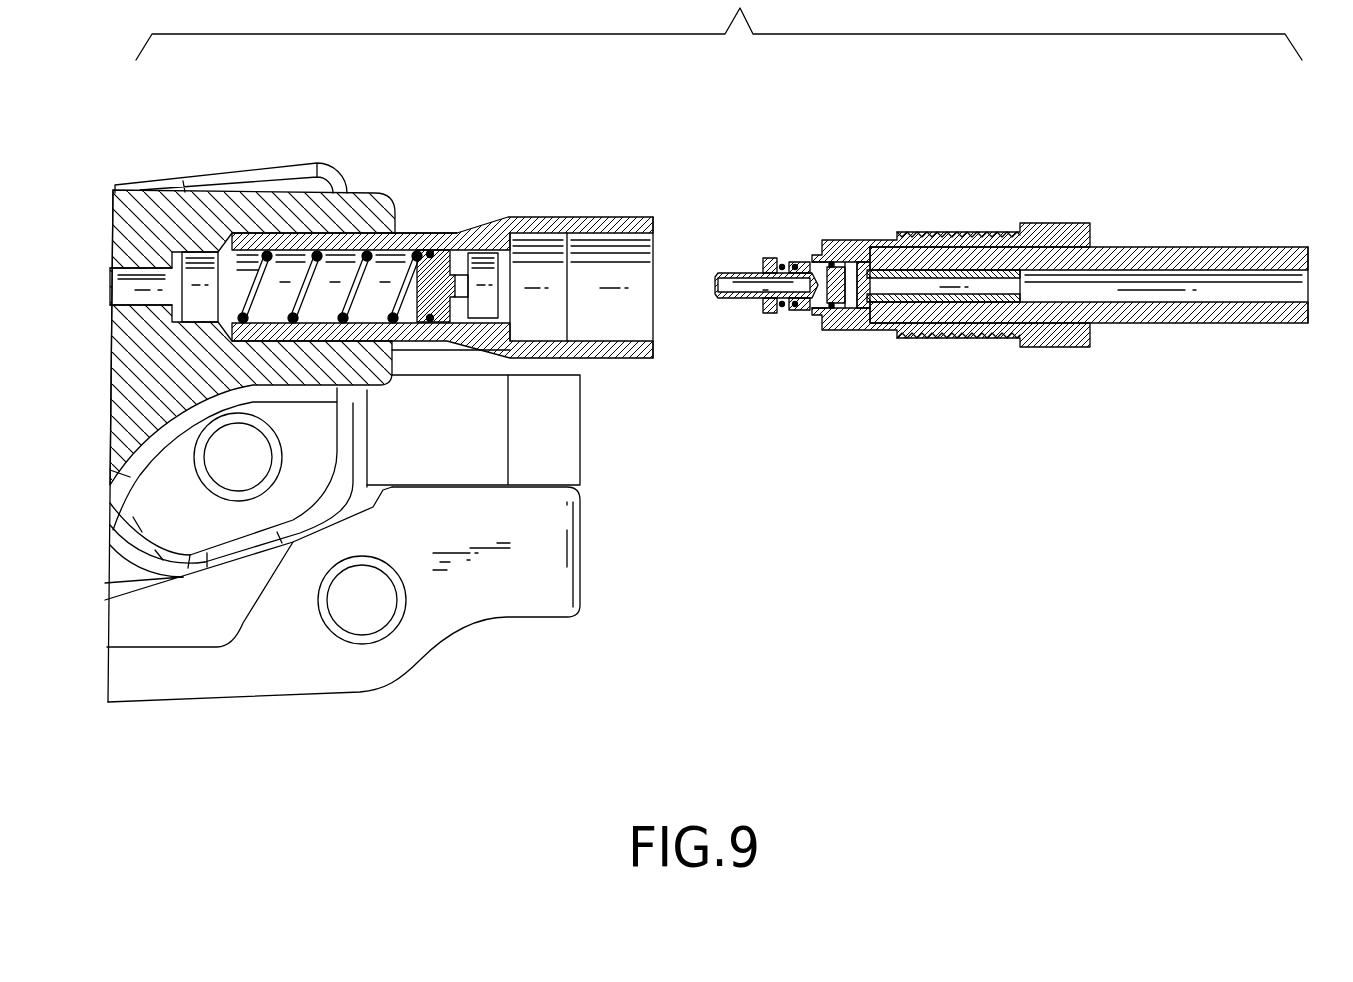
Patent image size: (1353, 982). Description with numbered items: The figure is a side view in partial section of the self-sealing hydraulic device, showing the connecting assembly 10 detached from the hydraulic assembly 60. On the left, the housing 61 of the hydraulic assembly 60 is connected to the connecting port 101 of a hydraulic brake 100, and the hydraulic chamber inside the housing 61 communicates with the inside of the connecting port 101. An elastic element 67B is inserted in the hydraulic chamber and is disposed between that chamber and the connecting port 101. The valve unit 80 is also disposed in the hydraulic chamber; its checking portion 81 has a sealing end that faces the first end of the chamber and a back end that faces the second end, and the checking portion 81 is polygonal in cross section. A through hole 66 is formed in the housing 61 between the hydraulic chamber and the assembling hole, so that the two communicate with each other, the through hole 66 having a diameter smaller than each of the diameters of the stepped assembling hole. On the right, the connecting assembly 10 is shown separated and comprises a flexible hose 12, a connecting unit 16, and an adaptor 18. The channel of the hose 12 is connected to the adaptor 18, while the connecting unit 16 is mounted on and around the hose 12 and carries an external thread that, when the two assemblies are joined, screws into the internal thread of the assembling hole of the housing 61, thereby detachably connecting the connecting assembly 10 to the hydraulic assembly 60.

The hydraulic brake 100 is at (293, 715).
The connecting port 101 is at (130, 287).
The hydraulic assembly 60 is at (424, 138).
The housing 61 is at (548, 225).
The elastic element 67B is at (393, 232).
The valve unit 80 is at (448, 257).
The checking portion 81 is at (437, 318).
The through hole 66 is at (470, 297).
The connecting assembly 10 is at (1105, 123).
The hose 12 is at (1135, 257).
The connecting unit 16 is at (1052, 225).
The adaptor 18 is at (873, 217).